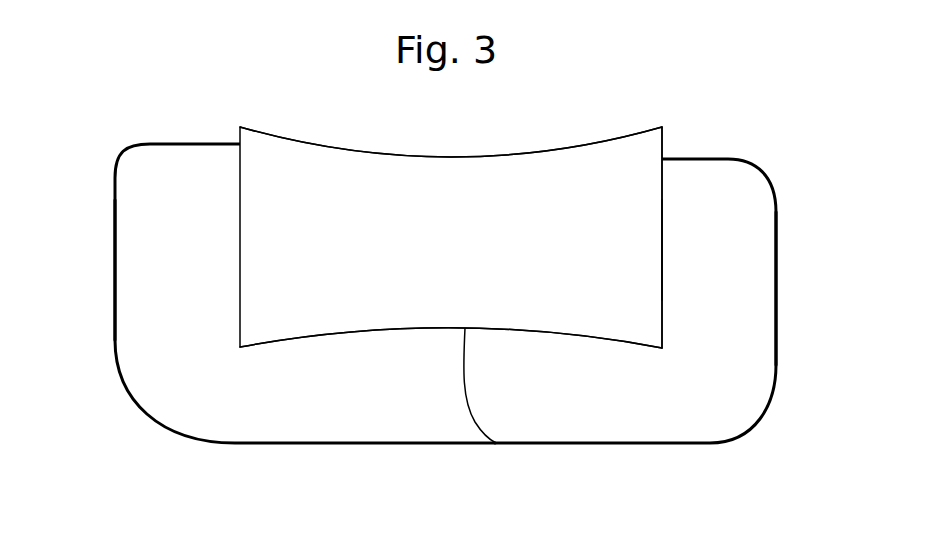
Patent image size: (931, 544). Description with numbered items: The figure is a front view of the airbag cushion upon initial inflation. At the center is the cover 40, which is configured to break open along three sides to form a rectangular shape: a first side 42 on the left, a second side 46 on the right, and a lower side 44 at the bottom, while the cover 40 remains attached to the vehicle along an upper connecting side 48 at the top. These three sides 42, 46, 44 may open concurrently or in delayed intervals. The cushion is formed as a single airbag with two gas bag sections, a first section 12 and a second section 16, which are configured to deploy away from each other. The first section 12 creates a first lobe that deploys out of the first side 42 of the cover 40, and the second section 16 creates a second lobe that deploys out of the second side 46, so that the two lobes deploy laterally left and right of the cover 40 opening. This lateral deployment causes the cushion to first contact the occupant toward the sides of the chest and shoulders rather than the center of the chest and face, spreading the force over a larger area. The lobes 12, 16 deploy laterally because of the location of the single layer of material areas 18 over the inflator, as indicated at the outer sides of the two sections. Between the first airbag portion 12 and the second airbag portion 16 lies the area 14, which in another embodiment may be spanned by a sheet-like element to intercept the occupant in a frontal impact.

The first section 12 is at (123, 223).
The area between the first and second airbag portions 14 is at (485, 385).
The second section 16 is at (763, 229).
The single layer of material areas 18 is at (115, 277).
The cover 40 is at (662, 246).
The first side 42 is at (240, 239).
The lower side 44 is at (565, 336).
The second side 46 is at (662, 140).
The upper connecting side 48 is at (457, 157).